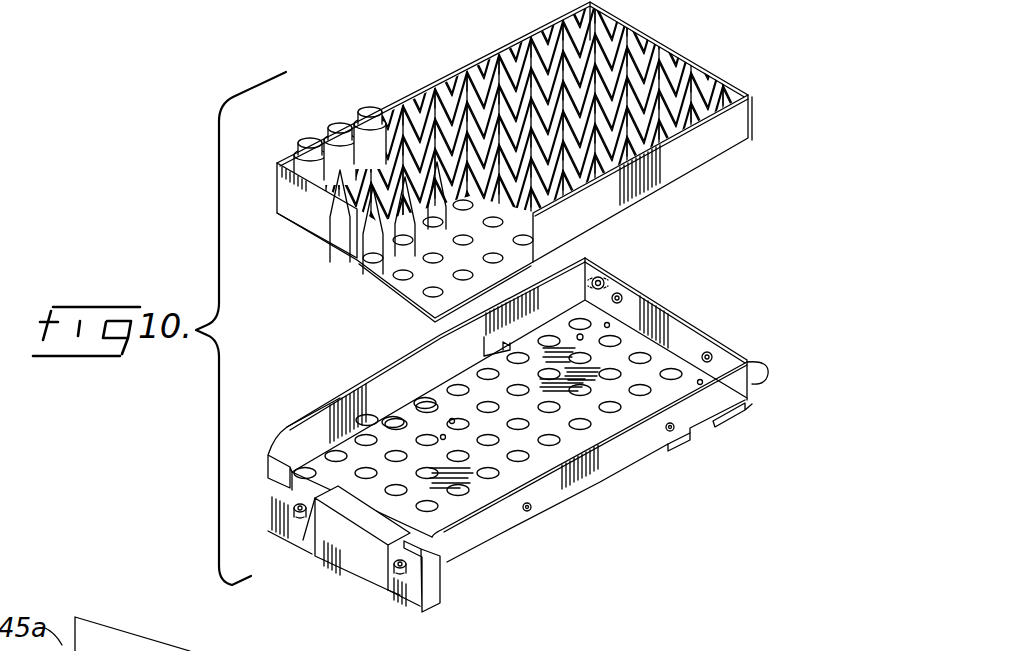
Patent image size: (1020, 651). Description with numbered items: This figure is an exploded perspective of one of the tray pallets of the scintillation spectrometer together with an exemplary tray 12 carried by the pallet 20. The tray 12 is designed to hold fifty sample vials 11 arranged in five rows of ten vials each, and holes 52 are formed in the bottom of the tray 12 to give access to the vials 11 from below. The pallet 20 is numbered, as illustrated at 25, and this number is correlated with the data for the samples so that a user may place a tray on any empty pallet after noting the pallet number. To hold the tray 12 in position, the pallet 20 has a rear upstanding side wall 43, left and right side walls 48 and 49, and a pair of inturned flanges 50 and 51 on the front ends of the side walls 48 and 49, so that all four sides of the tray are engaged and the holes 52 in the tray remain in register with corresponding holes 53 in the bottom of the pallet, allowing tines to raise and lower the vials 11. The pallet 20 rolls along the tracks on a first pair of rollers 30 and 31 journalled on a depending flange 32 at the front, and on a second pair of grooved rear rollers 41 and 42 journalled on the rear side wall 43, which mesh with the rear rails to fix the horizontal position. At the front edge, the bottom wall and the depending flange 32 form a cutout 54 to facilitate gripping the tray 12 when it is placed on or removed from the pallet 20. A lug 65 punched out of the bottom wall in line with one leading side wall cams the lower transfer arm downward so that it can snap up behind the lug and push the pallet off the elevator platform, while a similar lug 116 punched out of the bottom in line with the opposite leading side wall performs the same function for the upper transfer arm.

The vial 11 is at (368, 110).
The tray 12 is at (531, 152).
The pallet 20 is at (592, 496).
The pallet number 25 is at (272, 470).
The front roller 30 is at (303, 542).
The front roller 31 is at (390, 591).
The depending flange 32 is at (398, 576).
The rear roller 41 is at (603, 283).
The rear roller 42 is at (753, 366).
The rear side wall 43 is at (667, 308).
The left side wall 48 is at (310, 410).
The right side wall 49 is at (623, 457).
The inturned flange 50 is at (290, 488).
The inturned flange 51 is at (423, 590).
The tray holes 52 is at (372, 263).
The pallet holes 53 is at (424, 402).
The cutout 54 is at (370, 520).
The lug 65 is at (485, 346).
The lug 116 is at (673, 452).